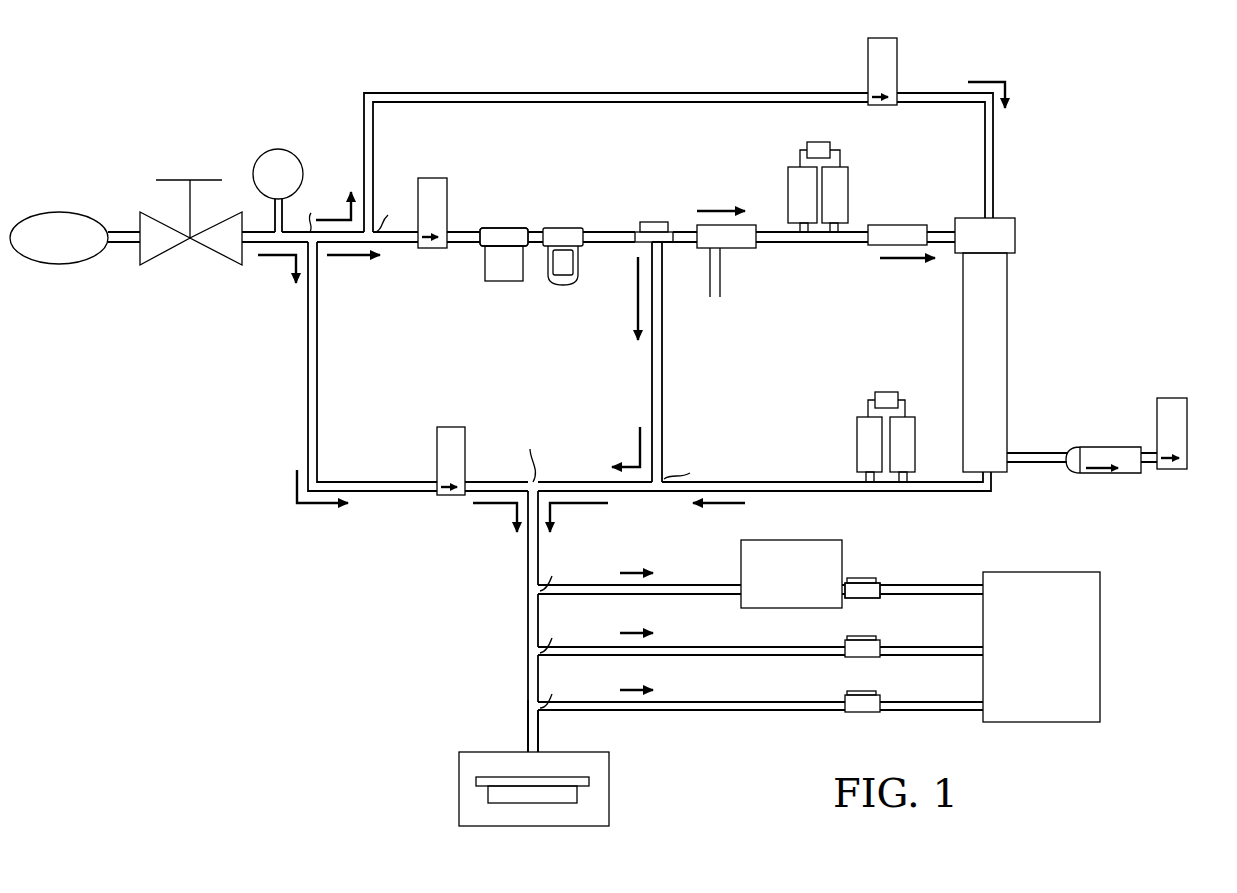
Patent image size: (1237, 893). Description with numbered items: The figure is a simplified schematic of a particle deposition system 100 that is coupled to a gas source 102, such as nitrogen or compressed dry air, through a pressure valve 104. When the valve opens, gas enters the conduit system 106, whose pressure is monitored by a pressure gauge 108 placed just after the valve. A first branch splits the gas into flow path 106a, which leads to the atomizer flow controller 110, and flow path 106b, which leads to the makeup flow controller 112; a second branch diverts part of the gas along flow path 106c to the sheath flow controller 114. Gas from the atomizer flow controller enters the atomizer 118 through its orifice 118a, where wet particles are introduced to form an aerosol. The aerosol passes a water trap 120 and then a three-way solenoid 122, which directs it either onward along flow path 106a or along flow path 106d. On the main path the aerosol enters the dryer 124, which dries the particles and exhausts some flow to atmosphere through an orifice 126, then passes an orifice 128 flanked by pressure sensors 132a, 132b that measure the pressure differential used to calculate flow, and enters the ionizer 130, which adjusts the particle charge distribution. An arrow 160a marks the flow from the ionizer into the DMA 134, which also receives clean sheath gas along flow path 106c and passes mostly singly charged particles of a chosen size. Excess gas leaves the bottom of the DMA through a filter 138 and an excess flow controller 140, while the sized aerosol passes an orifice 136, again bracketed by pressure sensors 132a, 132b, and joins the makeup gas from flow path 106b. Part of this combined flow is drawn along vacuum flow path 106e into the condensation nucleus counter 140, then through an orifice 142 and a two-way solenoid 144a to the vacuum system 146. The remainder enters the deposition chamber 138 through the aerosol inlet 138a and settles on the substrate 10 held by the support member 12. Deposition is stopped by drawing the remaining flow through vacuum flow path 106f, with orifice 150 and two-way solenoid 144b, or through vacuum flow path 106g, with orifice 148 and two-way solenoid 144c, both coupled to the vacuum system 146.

The substrate 10 is at (480, 778).
The support member 12 is at (577, 795).
The particle deposition system 100 is at (1101, 112).
The gas source 102 is at (62, 212).
The pressure valve 104 is at (210, 180).
The conduit system 106 is at (563, 93).
The flow path 106a is at (358, 273).
The flow path 106b is at (280, 263).
The flow path 106c is at (322, 218).
The flow path 106d is at (628, 325).
The vacuum flow path 106e is at (637, 573).
The vacuum flow path 106f is at (637, 633).
The vacuum flow path 106g is at (637, 690).
The pressure gauge 108 is at (268, 153).
The atomizer flow controller 110 is at (440, 178).
The makeup flow controller 112 is at (445, 427).
The sheath flow controller 114 is at (868, 68).
The atomizer 118 is at (522, 228).
The orifice 118a is at (486, 228).
The water trap 120 is at (575, 228).
The three-way solenoid 122 is at (652, 222).
The dryer 124 is at (748, 249).
The orifice 126 is at (716, 278).
The orifice 128 is at (820, 243).
The ionizer 130 is at (892, 225).
The pressure sensor 132a is at (795, 167).
The pressure sensor 132b is at (838, 167).
The differential mobility analyzer 134 is at (1017, 240).
The orifice 136 is at (890, 492).
The deposition chamber 138 is at (1080, 447).
The aerosol inlet 138a is at (528, 752).
The condensation nucleus counter 140 is at (1172, 398).
The orifice 142 is at (850, 578).
The two-way solenoid 144a is at (878, 580).
The two-way solenoid 144b is at (878, 638).
The two-way solenoid 144c is at (878, 694).
The vacuum system 146 is at (1050, 572).
The orifice 148 is at (835, 703).
The orifice 150 is at (835, 648).
The flow direction 160a is at (910, 265).